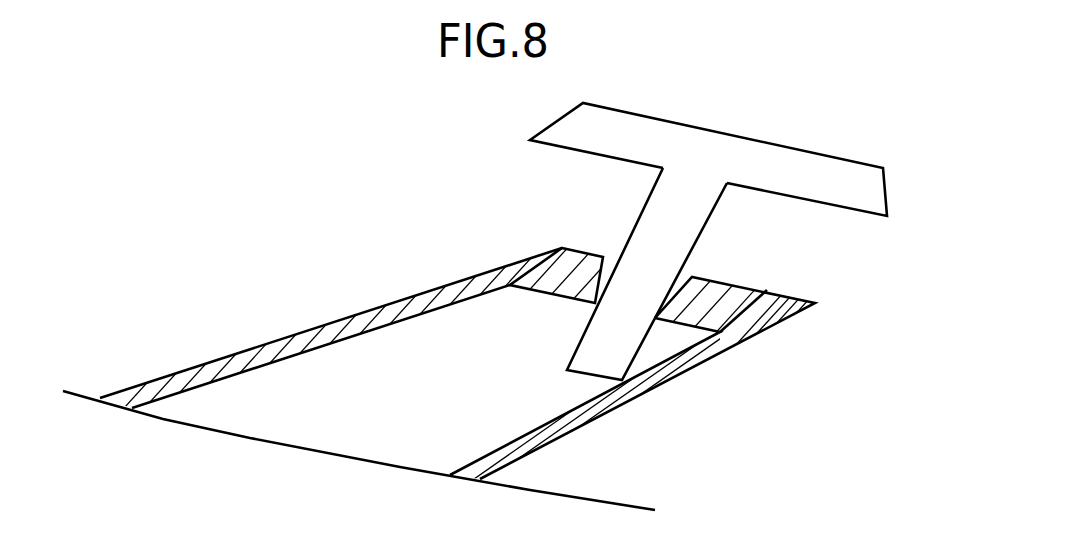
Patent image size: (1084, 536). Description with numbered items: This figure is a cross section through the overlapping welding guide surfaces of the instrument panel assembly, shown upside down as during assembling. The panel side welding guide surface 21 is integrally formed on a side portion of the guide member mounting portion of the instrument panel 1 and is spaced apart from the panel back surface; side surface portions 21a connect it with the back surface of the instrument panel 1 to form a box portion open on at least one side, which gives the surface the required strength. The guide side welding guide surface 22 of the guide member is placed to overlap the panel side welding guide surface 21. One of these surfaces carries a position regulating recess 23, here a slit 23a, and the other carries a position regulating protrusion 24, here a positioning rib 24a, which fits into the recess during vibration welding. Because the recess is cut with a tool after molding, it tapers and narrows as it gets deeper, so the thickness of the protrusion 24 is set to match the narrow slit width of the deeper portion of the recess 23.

The instrument panel 1 is at (78, 392).
The panel side welding guide surface 21 is at (422, 268).
The side surface portions 21a is at (336, 322).
The guide side welding guide surface 22 is at (684, 241).
The position regulating recess 23 is at (692, 268).
The slit 23a is at (690, 273).
The position regulating protrusion 24 is at (762, 274).
The positioning rib 24a is at (693, 215).